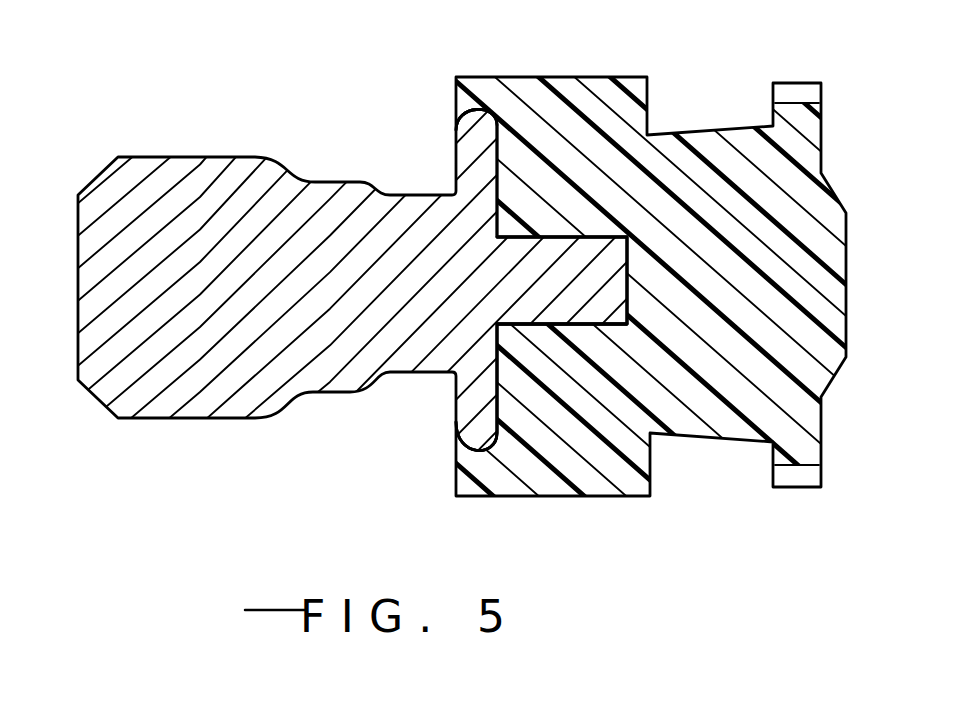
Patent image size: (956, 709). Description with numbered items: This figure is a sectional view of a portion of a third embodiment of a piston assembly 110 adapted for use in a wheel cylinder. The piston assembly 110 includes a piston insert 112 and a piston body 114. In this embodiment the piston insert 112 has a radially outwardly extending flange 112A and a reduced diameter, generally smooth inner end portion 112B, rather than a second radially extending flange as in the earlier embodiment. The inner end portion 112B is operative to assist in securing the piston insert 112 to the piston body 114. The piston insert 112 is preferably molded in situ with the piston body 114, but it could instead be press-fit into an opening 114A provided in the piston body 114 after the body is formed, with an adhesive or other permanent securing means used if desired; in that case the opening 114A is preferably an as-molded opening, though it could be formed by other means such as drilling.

The piston assembly 110 is at (455, 354).
The piston insert 112 is at (223, 424).
The radially outwardly extending flange 112A is at (479, 132).
The inner end portion 112B is at (595, 252).
The piston body 114 is at (512, 505).
The opening 114A is at (557, 323).